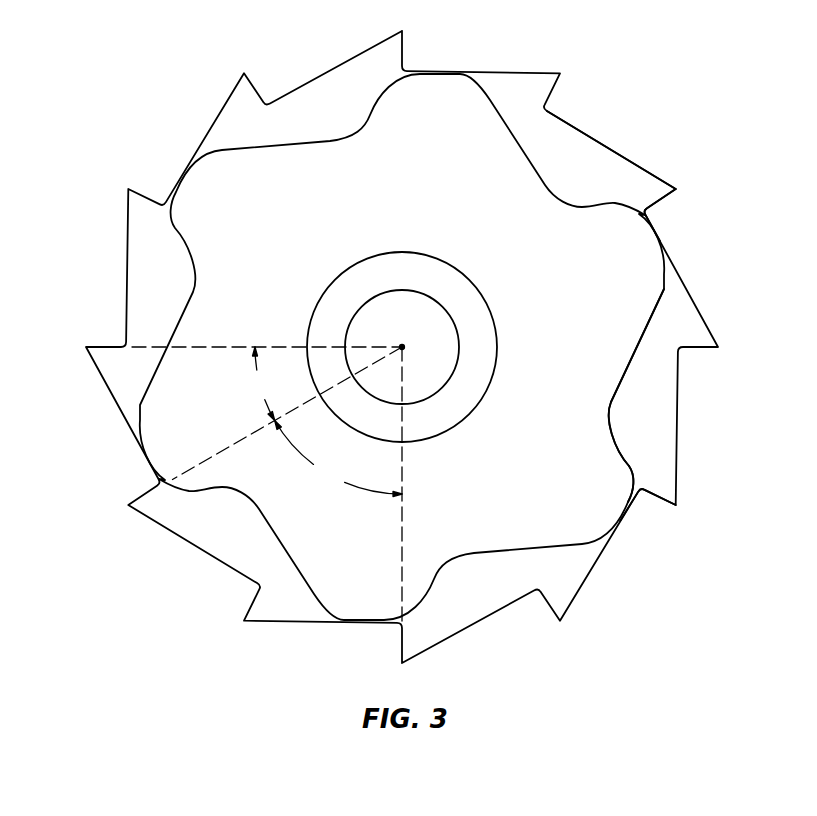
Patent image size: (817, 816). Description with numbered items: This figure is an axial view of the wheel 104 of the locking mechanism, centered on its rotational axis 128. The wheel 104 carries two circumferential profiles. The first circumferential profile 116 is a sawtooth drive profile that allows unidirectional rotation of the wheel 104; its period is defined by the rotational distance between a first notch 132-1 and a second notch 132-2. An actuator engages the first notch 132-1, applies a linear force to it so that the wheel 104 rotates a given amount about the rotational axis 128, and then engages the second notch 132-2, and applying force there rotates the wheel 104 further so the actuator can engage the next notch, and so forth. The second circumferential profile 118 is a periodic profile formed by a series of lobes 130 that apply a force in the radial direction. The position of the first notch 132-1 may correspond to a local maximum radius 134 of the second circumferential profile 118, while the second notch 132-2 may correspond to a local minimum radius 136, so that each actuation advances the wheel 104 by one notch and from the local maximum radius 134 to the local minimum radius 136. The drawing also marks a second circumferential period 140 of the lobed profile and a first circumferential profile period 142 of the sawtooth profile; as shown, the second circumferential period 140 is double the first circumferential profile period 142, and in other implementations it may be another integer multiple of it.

The wheel 104 is at (609, 125).
The first circumferential profile 116 is at (648, 172).
The second circumferential profile 118 is at (610, 419).
The rotational axis 128 is at (402, 347).
The lobes 130 is at (630, 270).
The first notch 132-1 is at (647, 213).
The second notch 132-2 is at (633, 353).
The local maximum radius 134 is at (628, 507).
The local minimum radius 136 is at (612, 423).
The second circumferential period 140 is at (338, 459).
The first circumferential profile period 142 is at (262, 384).